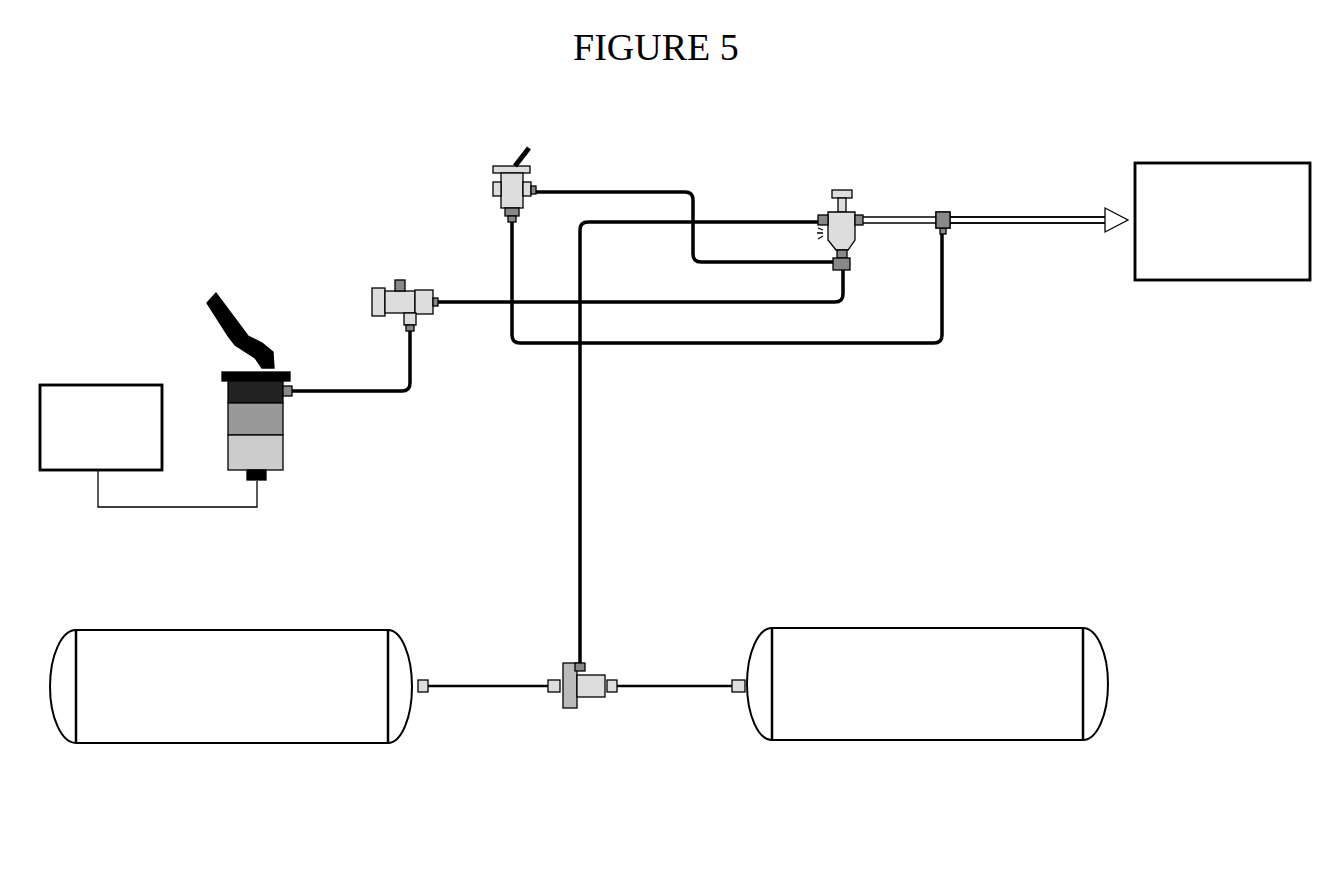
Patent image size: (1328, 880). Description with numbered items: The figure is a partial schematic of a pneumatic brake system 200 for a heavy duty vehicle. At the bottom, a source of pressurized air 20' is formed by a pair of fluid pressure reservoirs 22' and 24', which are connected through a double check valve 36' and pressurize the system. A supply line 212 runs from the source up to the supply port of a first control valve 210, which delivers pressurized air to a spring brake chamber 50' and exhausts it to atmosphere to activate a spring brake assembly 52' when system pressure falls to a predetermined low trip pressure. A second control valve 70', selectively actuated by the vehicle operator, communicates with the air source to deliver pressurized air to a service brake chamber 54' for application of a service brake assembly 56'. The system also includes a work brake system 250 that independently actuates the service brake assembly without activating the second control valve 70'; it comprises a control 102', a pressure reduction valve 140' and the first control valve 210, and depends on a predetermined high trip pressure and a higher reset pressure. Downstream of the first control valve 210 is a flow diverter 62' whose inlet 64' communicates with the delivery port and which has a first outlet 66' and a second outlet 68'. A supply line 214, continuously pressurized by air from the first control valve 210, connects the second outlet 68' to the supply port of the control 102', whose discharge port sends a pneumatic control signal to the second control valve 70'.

The pneumatic brake system 200 is at (298, 168).
The spring brake chamber 50' is at (1222, 176).
The spring brake assembly 52' is at (1222, 221).
The service brake chamber 54' is at (148, 396).
The service brake assembly 56' is at (101, 427).
The second control valve 70' is at (308, 360).
The pressure reduction valve 140' is at (607, 335).
The control 102' is at (560, 168).
The work brake system 250 is at (693, 168).
The supply line 214 is at (787, 346).
The supply line 212 is at (583, 552).
The first control valve 210 is at (872, 166).
The flow diverter 62' is at (995, 189).
The inlet 64' is at (928, 196).
The first outlet 66' is at (1027, 204).
The second outlet 68' is at (973, 242).
The fluid pressure reservoir 22' is at (239, 719).
The fluid pressure reservoir 24' is at (920, 716).
The double check valve 36' is at (580, 726).
The source of pressurized air 20' is at (450, 828).